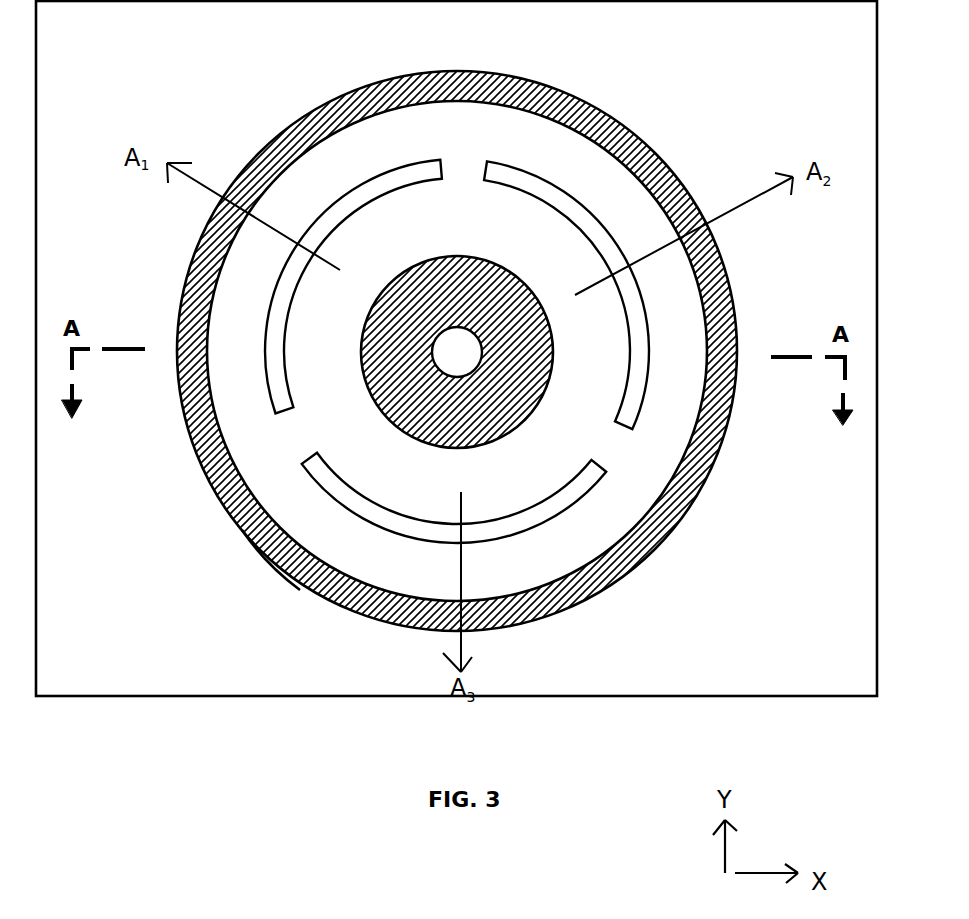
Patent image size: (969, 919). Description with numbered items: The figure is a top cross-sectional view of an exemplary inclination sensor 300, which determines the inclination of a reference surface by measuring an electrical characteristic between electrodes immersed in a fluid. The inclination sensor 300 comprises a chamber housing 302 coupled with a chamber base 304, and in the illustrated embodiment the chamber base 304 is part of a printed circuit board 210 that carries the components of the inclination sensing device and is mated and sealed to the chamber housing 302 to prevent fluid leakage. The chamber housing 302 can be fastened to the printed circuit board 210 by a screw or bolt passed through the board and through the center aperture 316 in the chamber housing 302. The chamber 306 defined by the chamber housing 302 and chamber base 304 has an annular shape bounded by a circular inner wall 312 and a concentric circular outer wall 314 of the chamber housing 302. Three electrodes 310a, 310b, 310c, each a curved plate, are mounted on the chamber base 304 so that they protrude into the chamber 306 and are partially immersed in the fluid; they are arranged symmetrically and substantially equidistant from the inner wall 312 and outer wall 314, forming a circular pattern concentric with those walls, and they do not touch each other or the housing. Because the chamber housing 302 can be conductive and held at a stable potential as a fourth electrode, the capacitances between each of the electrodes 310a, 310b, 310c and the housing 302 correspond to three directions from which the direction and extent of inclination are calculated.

The printed circuit board 210 is at (845, 689).
The inclination sensor 300 is at (464, 341).
The chamber housing 302 is at (737, 297).
The chamber base 304 is at (344, 359).
The chamber 306 is at (238, 405).
The first electrode 310a is at (362, 180).
The second electrode 310b is at (555, 185).
The third electrode 310c is at (546, 525).
The circular inner wall 312 is at (390, 422).
The circular outer wall 314 is at (300, 541).
The center aperture 316 is at (458, 353).